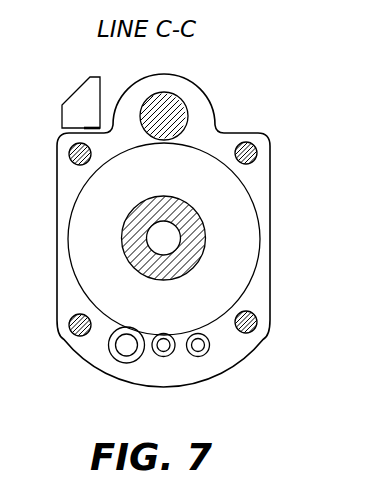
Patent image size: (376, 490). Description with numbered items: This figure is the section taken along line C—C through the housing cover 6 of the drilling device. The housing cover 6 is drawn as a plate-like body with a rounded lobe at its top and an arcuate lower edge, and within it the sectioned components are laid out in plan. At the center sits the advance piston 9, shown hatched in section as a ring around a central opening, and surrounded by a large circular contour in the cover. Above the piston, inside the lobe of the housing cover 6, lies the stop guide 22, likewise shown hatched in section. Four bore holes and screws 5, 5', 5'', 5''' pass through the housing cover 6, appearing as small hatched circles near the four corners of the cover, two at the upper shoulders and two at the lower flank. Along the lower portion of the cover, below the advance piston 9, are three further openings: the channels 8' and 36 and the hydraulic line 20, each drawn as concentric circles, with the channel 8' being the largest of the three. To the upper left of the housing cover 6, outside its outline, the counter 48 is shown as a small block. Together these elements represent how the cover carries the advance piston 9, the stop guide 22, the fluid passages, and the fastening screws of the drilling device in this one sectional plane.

The bore hole and screw 5 is at (59, 148).
The bore hole and screw 5' is at (271, 147).
The bore hole and screw 5'' is at (64, 349).
The bore hole and screw 5''' is at (271, 344).
The housing cover 6 is at (261, 190).
The channel 8' is at (127, 372).
The advance piston 9 is at (203, 228).
The hydraulic line 20 is at (198, 345).
The stop guide 22 is at (180, 110).
The channel 36 is at (163, 345).
The counter 48 is at (85, 100).